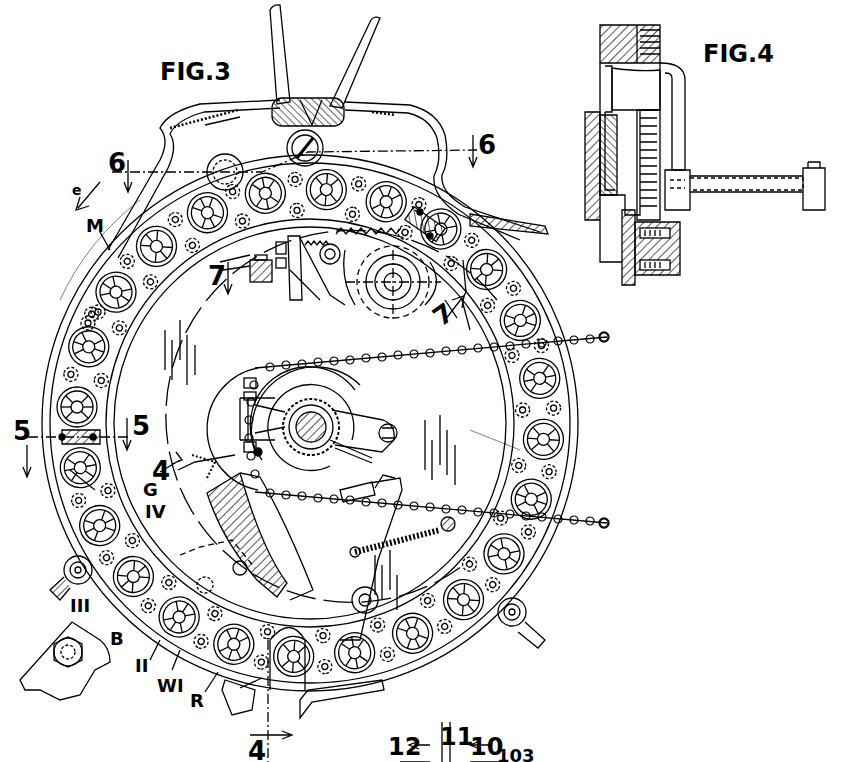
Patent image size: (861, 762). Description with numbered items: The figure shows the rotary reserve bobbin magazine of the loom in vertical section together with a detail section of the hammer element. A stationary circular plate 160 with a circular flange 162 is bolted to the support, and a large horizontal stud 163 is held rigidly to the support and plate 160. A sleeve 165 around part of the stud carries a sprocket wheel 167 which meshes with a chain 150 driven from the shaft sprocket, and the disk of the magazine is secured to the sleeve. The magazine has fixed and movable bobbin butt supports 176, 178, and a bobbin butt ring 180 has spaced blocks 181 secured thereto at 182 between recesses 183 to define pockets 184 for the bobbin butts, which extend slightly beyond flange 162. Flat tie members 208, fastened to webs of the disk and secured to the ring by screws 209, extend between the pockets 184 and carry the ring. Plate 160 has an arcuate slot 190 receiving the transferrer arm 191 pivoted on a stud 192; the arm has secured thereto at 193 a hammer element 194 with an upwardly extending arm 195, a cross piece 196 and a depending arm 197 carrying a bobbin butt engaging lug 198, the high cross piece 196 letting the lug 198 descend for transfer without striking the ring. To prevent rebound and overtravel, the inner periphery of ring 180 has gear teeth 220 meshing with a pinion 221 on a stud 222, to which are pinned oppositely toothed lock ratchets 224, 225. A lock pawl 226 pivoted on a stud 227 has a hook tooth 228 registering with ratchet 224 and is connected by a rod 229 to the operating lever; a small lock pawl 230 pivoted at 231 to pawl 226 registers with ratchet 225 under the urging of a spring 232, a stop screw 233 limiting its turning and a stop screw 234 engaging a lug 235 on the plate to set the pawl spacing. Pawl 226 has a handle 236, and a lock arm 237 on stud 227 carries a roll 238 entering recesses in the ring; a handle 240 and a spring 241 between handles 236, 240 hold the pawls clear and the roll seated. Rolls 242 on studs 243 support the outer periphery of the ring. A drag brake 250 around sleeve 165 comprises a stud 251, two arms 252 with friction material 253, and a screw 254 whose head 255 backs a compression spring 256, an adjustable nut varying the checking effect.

In FIG. 3, the chain 150 is at (590, 345).
In FIG. 3, the circular plate 160 is at (490, 443).
In FIG. 4, the circular plate 160 is at (612, 38).
In FIG. 3, the circular flange 162 is at (85, 290).
In FIG. 3, the horizontal stud 163 is at (322, 432).
In FIG. 3, the sleeve 165 is at (265, 470).
In FIG. 3, the sprocket wheel 167 is at (360, 415).
In FIG. 3, the fixed bobbin butt support 176 is at (248, 708).
In FIG. 3, the movable bobbin butt support 178 is at (306, 708).
In FIG. 3, the bobbin butt ring 180 is at (100, 412).
In FIG. 4, the bobbin butt ring 180 is at (650, 272).
In FIG. 3, the blocks 181 is at (80, 322).
In FIG. 4, the blocks 181 is at (672, 250).
In FIG. 3, the securing point of blocks 182 is at (100, 318).
In FIG. 4, the securing point of blocks 182 is at (675, 233).
In FIG. 3, the recesses 183 is at (68, 425).
In FIG. 3, the pockets 184 is at (60, 490).
In FIG. 3, the arcuate slot 190 is at (290, 565).
In FIG. 4, the arcuate slot 190 is at (600, 100).
In FIG. 3, the transferrer arm 191 is at (85, 618).
In FIG. 4, the transferrer arm 191 is at (588, 127).
In FIG. 3, the stud 192 is at (62, 660).
In FIG. 3, the securing point of hammer element 193 is at (217, 566).
In FIG. 3, the hammer element 194 is at (212, 520).
In FIG. 4, the hammer element 194 is at (608, 155).
In FIG. 4, the upwardly extending arm 195 is at (612, 92).
In FIG. 4, the cross piece 196 is at (637, 82).
In FIG. 3, the depending arm 197 is at (260, 548).
In FIG. 4, the depending arm 197 is at (680, 105).
In FIG. 3, the bobbin butt engaging lug 198 is at (290, 618).
In FIG. 4, the bobbin butt engaging lug 198 is at (676, 200).
In FIG. 3, the tie member 208 is at (425, 215).
In FIG. 3, the screws 209 is at (428, 600).
In FIG. 3, the gear teeth 220 is at (468, 300).
In FIG. 4, the gear teeth 220 is at (650, 160).
In FIG. 3, the pinion 221 is at (459, 325).
In FIG. 3, the stud 222 is at (432, 295).
In FIG. 3, the lock ratchet 224 is at (393, 300).
In FIG. 3, the lock ratchet 225 is at (355, 300).
In FIG. 3, the lock pawl 226 is at (322, 300).
In FIG. 3, the stud 227 is at (322, 152).
In FIG. 3, the hook tooth 228 is at (365, 300).
In FIG. 3, the rod 229 is at (535, 228).
In FIG. 3, the small lock pawl 230 is at (298, 300).
In FIG. 3, the pivot 231 is at (312, 260).
In FIG. 3, the spring 232 is at (325, 262).
In FIG. 3, the stop screw 233 is at (278, 262).
In FIG. 3, the stop screw 234 is at (245, 272).
In FIG. 3, the lug 235 is at (255, 282).
In FIG. 3, the handle 236 is at (358, 58).
In FIG. 3, the lock arm 237 is at (258, 152).
In FIG. 3, the roll 238 is at (212, 165).
In FIG. 3, the handle 240 is at (272, 18).
In FIG. 3, the spring 241 is at (312, 104).
In FIG. 3, the rolls 242 is at (70, 562).
In FIG. 3, the studs 243 is at (64, 572).
In FIG. 3, the drag brake 250 is at (330, 395).
In FIG. 3, the stud 251 is at (396, 428).
In FIG. 3, the arms 252 is at (244, 447).
In FIG. 3, the friction material 253 is at (372, 460).
In FIG. 3, the screw 254 is at (240, 420).
In FIG. 3, the head 255 is at (250, 380).
In FIG. 3, the compression spring 256 is at (244, 395).